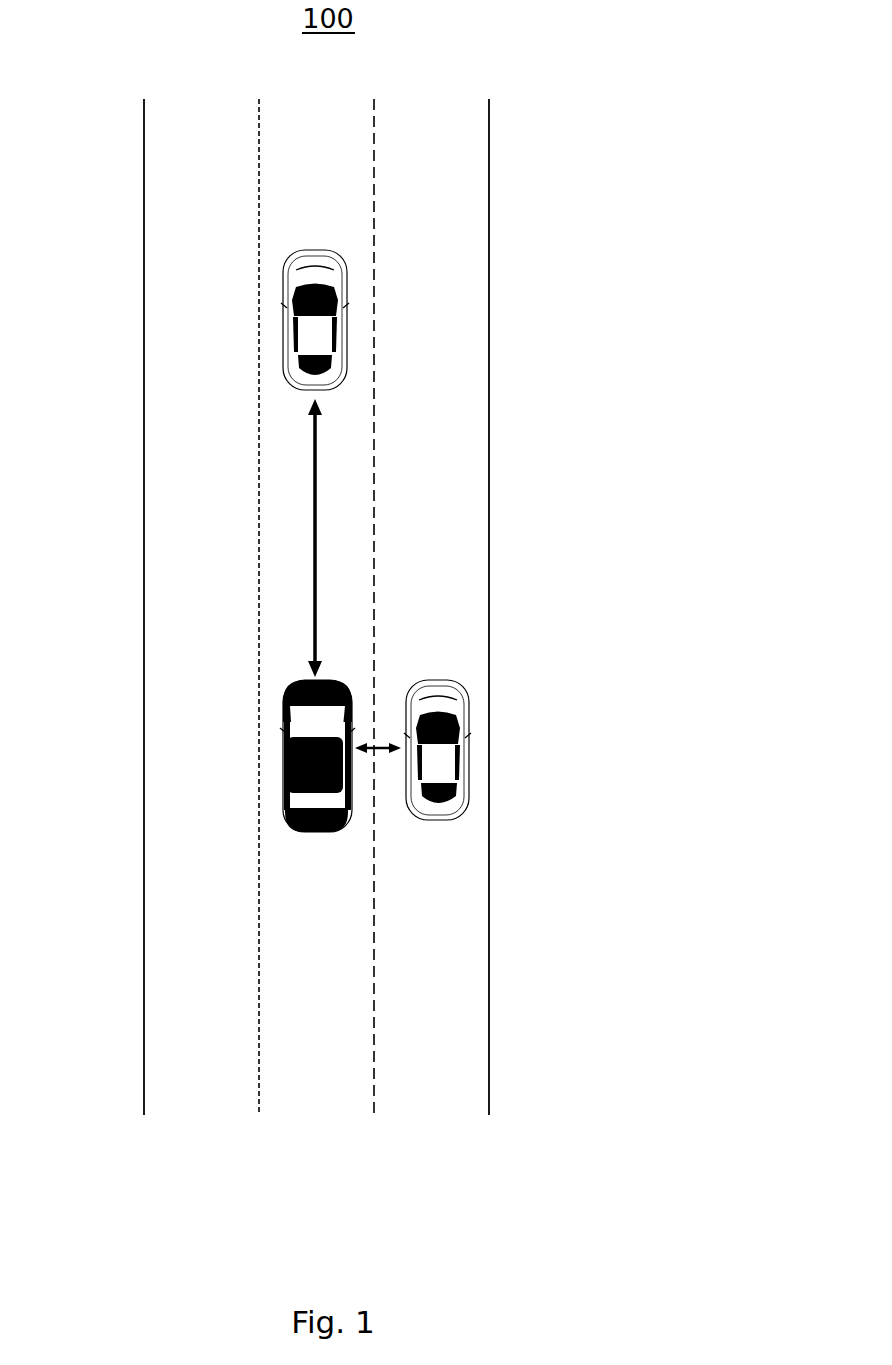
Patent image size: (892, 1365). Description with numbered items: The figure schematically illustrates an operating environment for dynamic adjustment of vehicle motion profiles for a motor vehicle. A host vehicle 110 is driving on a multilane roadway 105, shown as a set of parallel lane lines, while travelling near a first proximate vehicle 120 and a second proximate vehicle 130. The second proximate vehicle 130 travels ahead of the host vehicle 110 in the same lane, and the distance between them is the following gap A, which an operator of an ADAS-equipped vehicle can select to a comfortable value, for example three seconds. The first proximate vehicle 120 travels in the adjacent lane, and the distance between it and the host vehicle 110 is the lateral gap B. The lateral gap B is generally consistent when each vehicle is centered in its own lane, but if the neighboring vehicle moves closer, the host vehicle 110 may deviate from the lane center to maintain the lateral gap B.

The multilane roadway 105 is at (500, 346).
The host vehicle 110 is at (366, 819).
The first proximate vehicle 120 is at (488, 751).
The second proximate vehicle 130 is at (362, 254).
The following gap A is at (298, 538).
The lateral gap B is at (386, 725).